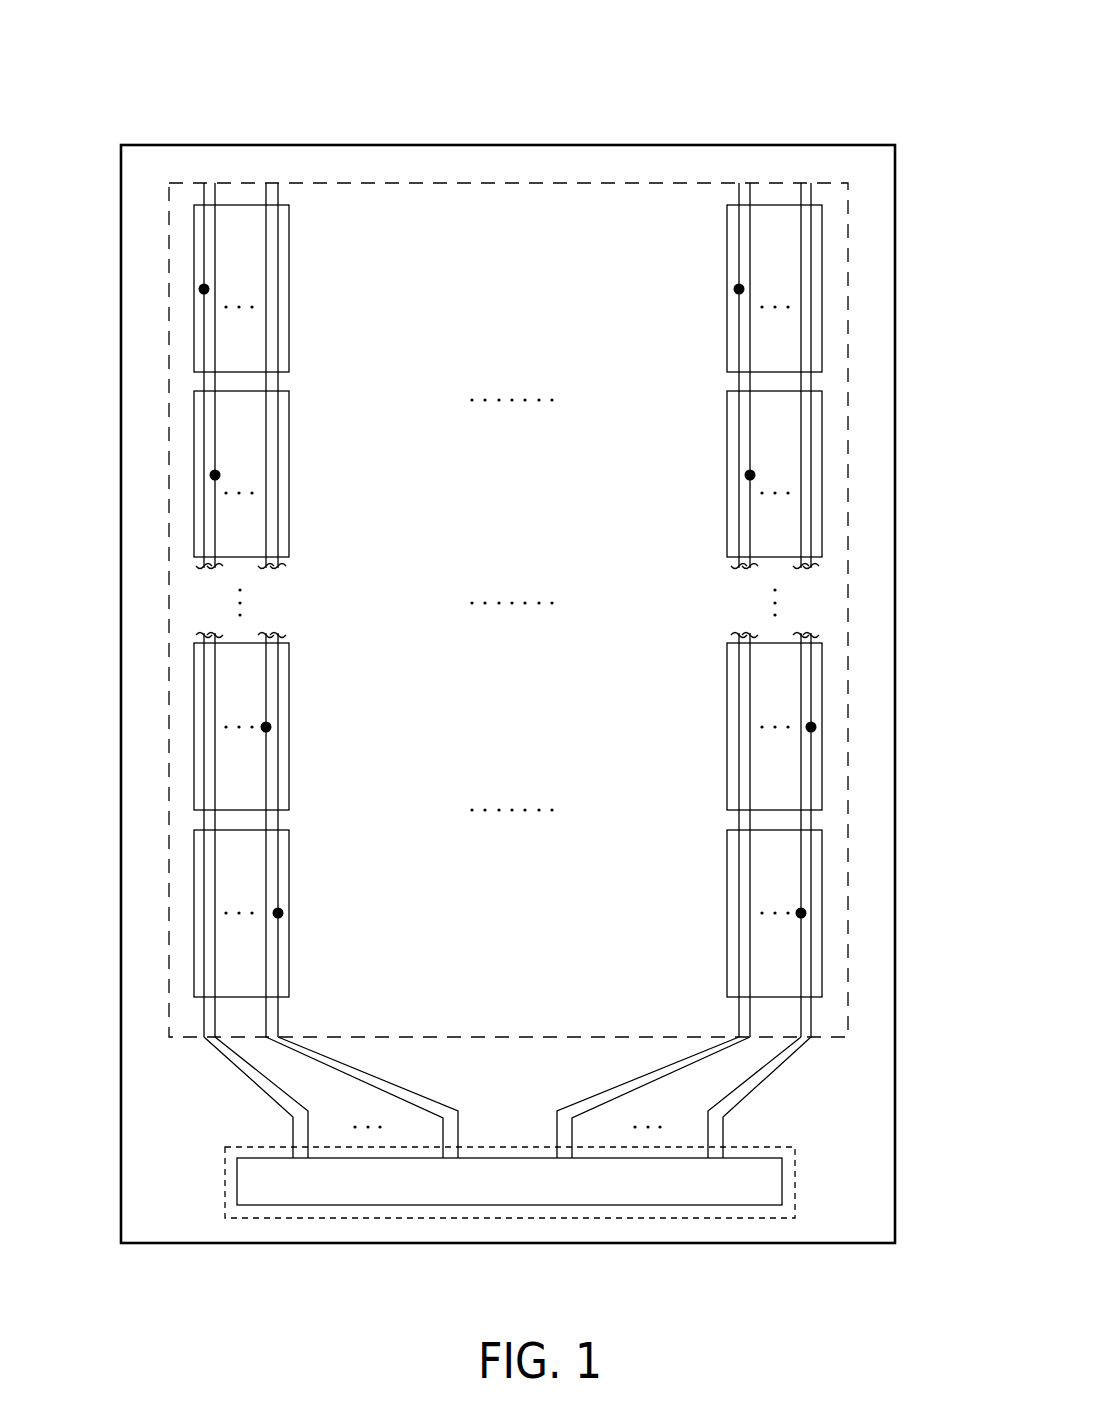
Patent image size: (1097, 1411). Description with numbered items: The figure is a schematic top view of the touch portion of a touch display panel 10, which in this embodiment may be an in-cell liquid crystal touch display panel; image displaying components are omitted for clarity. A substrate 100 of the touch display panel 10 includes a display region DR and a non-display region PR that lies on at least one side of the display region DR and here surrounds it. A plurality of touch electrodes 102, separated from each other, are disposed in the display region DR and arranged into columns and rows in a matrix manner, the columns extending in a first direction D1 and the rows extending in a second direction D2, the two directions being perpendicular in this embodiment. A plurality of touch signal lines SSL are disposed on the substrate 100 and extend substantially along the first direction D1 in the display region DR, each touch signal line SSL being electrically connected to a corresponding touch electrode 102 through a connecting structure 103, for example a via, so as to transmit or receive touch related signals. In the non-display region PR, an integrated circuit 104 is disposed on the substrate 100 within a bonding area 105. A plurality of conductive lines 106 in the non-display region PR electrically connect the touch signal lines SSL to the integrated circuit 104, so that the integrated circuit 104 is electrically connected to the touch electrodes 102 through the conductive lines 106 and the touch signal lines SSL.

The touch display panel 10 is at (818, 52).
The substrate 100 is at (880, 145).
The touch electrodes 102 is at (239, 220).
The connecting structure 103 is at (204, 289).
The integrated circuit 104 is at (530, 1193).
The bonding area 105 is at (770, 1147).
The conductive lines 106 is at (232, 1066).
The non-display region PR is at (344, 170).
The display region DR is at (450, 207).
The touch signal lines SSL is at (279, 252).
The first direction D1 is at (72, 1342).
The second direction D2 is at (72, 1342).